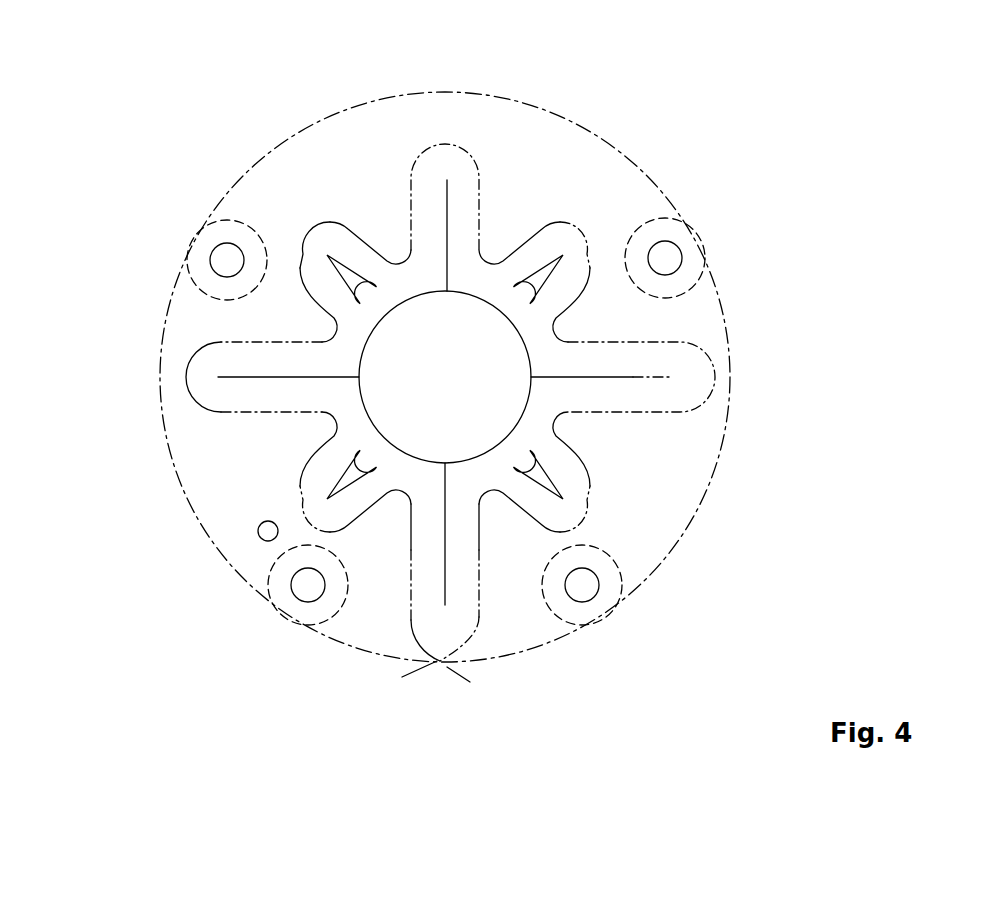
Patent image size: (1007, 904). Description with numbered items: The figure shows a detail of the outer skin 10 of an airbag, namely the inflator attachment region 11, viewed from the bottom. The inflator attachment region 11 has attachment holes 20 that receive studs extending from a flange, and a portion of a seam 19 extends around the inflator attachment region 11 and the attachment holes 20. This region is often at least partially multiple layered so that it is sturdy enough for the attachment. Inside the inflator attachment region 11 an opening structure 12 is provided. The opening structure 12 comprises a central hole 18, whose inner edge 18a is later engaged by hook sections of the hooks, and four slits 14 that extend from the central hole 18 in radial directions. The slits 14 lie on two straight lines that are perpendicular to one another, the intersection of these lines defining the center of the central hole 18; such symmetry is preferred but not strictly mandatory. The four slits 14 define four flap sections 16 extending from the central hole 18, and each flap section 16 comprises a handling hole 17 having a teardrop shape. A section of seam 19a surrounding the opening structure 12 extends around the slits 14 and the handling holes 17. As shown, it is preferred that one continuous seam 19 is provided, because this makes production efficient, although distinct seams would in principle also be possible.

The outer skin of airbag 10 is at (97, 0).
The inflator attachment region 11 is at (647, 650).
The opening structure 12 is at (650, 397).
The slit 14 is at (448, 212).
The flap section 16 is at (533, 255).
The handling hole 17 is at (530, 295).
The central hole 18 is at (432, 382).
The inner edge 18a is at (503, 432).
The seam 19 is at (192, 512).
The section of seam surrounding the opening structure 19a is at (595, 502).
The attachment hole 20 is at (225, 262).